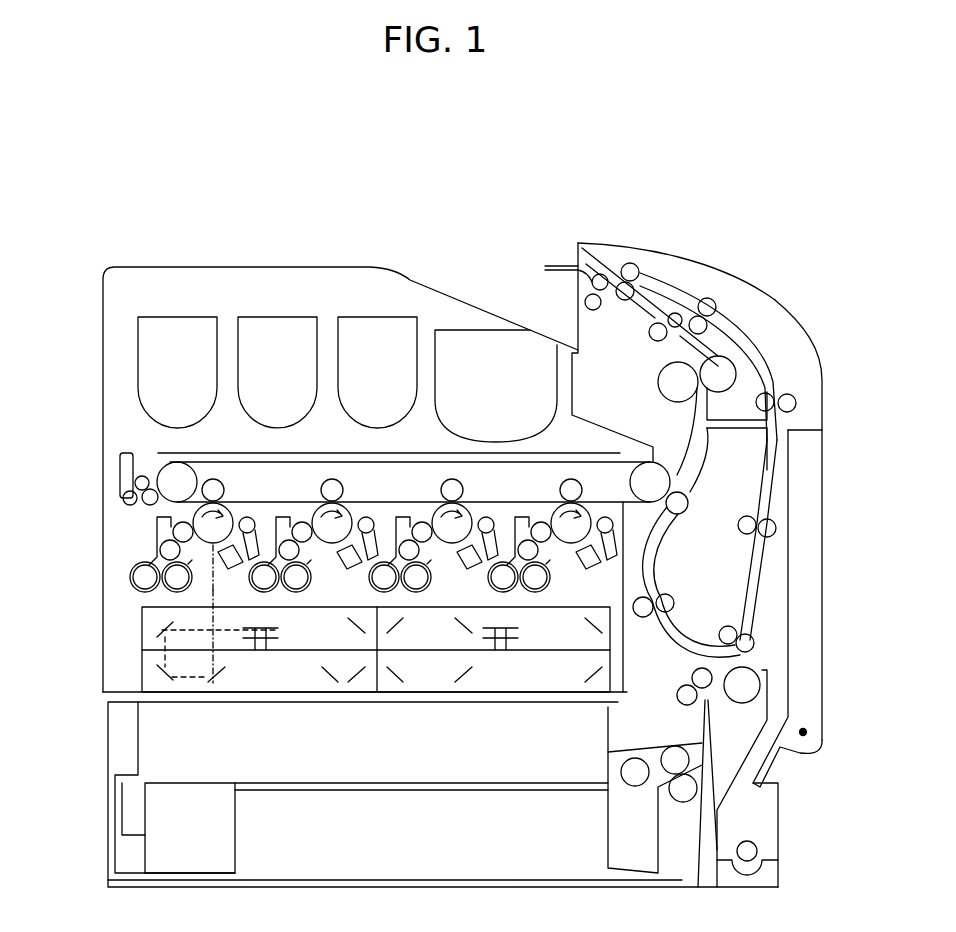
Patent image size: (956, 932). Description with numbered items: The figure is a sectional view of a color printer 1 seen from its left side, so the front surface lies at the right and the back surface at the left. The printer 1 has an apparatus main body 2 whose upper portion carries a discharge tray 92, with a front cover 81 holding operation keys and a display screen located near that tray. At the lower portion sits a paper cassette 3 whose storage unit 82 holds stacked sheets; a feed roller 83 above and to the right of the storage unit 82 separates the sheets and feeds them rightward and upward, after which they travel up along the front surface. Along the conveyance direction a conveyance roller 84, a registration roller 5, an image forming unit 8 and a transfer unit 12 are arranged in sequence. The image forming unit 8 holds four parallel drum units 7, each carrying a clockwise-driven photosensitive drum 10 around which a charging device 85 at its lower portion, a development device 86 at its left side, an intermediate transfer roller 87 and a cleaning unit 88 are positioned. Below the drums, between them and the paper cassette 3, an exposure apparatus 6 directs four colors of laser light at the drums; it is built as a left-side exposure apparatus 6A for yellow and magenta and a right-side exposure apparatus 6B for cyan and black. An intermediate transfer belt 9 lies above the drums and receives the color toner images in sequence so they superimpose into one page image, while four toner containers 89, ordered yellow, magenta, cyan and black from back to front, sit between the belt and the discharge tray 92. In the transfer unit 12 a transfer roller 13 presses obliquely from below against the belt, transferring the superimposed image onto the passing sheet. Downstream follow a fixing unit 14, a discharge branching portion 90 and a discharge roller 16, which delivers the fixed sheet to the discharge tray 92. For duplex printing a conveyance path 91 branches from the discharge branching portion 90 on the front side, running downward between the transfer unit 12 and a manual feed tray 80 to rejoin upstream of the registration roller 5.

The printer 1 is at (108, 231).
The apparatus main body 2 is at (758, 282).
The paper cassette 3 is at (106, 818).
The registration roller 5 is at (657, 592).
The exposure apparatus 6 is at (318, 721).
The exposure apparatus 6A is at (140, 632).
The exposure apparatus 6B is at (470, 680).
The drum unit 7 is at (340, 561).
The image forming unit 8 is at (334, 561).
The intermediate transfer belt 9 is at (360, 400).
The photosensitive drum 10 is at (450, 484).
The transfer unit 12 is at (702, 497).
The transfer roller 13 is at (703, 490).
The fixing unit 14 is at (675, 386).
The discharge roller 16 is at (593, 262).
The manual feed tray 80 is at (812, 618).
The front cover 81 is at (800, 366).
The storage unit 82 is at (376, 828).
The feed roller 83 is at (646, 790).
The conveyance roller 84 is at (680, 696).
The charging device 85 is at (348, 590).
The development device 86 is at (127, 559).
The intermediate transfer roller 87 is at (208, 494).
The cleaning unit 88 is at (605, 560).
The toner container 89 is at (272, 330).
The discharge branching portion 90 is at (673, 286).
The conveyance path 91 is at (795, 446).
The discharge tray 92 is at (450, 246).